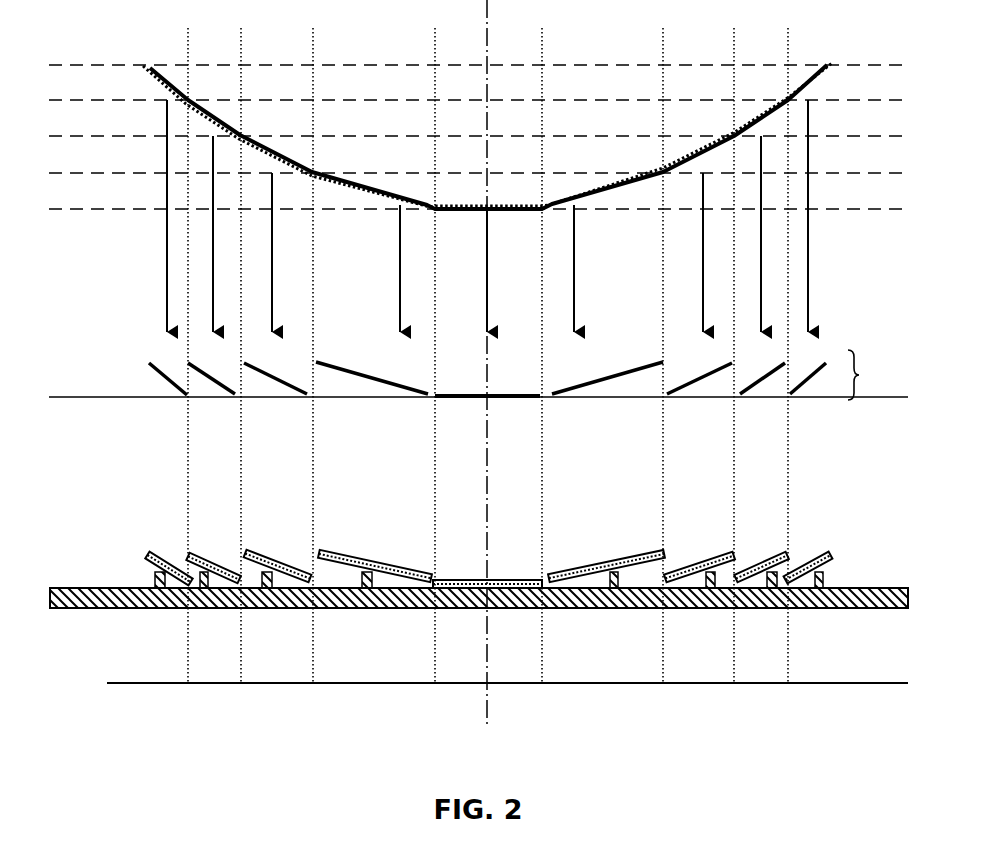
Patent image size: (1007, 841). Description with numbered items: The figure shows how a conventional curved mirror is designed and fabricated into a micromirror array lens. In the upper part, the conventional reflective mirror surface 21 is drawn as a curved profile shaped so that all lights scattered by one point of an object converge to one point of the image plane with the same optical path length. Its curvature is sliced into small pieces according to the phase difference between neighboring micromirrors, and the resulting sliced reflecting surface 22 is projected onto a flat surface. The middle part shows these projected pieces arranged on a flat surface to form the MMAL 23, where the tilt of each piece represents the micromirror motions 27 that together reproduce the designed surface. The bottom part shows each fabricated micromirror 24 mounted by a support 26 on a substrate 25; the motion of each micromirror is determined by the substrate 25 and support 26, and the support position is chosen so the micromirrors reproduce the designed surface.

The conventional reflective mirror surface 21 is at (165, 88).
The sliced reflecting surface 22 is at (270, 147).
The MMAL 23 is at (521, 387).
The fabricated micromirror 24 is at (818, 542).
The substrate 25 is at (97, 578).
The support 26 is at (355, 577).
The micromirror motions 27 is at (620, 380).